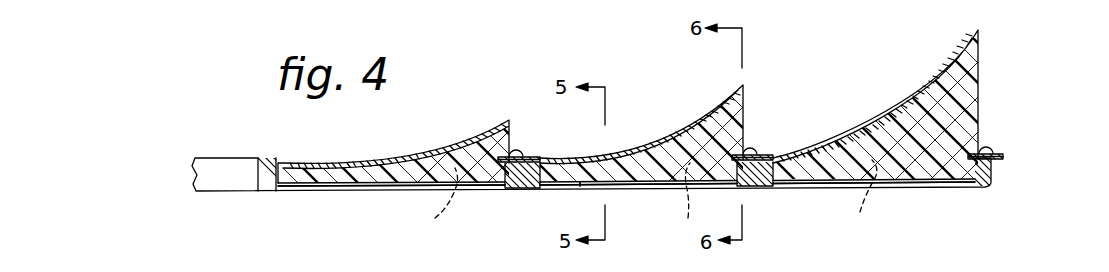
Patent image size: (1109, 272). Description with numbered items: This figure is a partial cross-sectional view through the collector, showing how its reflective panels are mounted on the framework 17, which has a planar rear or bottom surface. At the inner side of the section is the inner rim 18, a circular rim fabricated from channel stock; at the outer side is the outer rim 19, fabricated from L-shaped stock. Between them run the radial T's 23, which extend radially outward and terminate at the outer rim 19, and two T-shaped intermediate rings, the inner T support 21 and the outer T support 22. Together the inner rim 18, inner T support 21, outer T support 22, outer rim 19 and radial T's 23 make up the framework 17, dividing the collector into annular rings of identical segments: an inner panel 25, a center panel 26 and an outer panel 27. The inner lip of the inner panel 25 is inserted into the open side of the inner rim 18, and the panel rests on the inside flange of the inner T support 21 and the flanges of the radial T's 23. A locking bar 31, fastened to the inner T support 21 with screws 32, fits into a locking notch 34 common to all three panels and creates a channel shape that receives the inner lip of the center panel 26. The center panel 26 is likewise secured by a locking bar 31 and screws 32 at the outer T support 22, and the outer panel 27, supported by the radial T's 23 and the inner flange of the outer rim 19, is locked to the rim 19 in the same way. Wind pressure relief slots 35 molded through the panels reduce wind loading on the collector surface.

The framework 17 is at (556, 190).
The inner rim 18 is at (268, 192).
The outer rim 19 is at (988, 190).
The inner T support 21 is at (511, 190).
The outer T support 22 is at (760, 188).
The radial T's 23 is at (802, 210).
The inner panel 25 is at (414, 158).
The center panel 26 is at (665, 138).
The outer panel 27 is at (917, 98).
The locking bar 31 is at (1012, 196).
The screws 32 is at (1000, 153).
The locking notch 34 is at (992, 150).
The wind pressure relief slots 35 is at (647, 200).